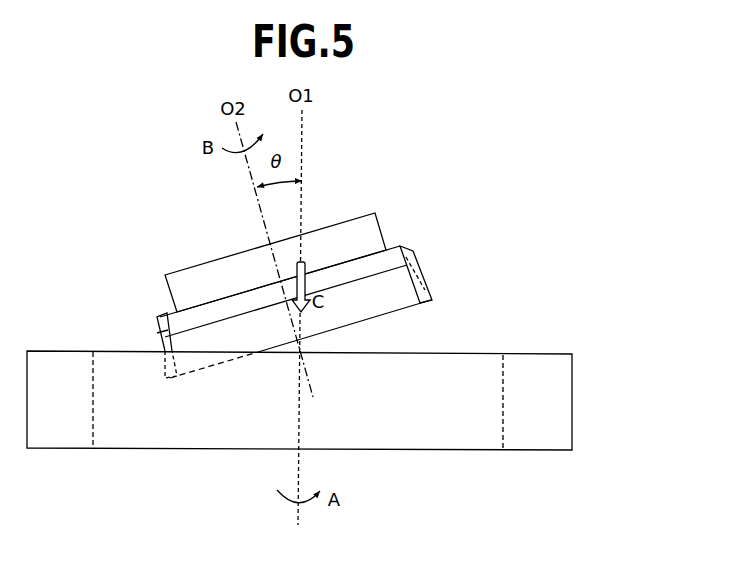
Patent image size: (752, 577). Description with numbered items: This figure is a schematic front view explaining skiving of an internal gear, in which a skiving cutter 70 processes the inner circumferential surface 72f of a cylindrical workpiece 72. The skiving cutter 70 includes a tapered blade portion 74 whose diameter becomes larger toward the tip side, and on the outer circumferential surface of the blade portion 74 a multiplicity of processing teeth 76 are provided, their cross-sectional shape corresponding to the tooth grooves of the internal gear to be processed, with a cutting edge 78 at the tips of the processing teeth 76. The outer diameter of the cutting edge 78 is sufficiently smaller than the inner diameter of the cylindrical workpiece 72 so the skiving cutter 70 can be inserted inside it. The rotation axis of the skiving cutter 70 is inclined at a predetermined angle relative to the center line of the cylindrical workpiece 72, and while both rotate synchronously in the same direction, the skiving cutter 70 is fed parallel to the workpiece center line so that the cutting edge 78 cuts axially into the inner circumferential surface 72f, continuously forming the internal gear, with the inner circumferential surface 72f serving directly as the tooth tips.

The skiving cutter 70 is at (413, 193).
The cylindrical workpiece 72 is at (175, 425).
The inner circumferential surface 72f is at (502, 427).
The blade portion 74 is at (151, 340).
The processing teeth 76 is at (418, 285).
The cutting edge 78 is at (295, 312).